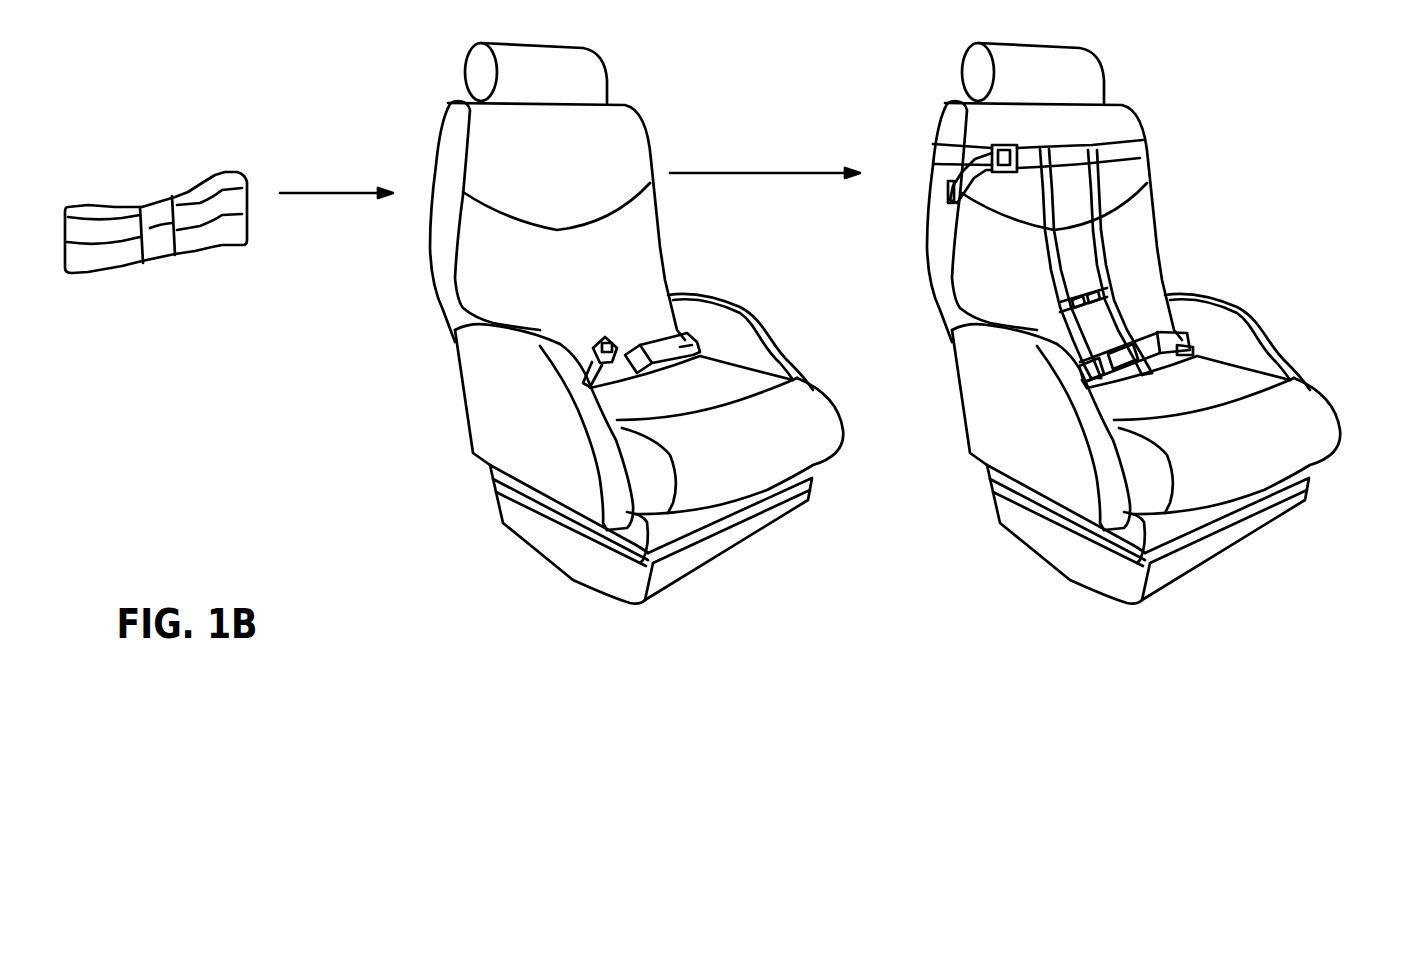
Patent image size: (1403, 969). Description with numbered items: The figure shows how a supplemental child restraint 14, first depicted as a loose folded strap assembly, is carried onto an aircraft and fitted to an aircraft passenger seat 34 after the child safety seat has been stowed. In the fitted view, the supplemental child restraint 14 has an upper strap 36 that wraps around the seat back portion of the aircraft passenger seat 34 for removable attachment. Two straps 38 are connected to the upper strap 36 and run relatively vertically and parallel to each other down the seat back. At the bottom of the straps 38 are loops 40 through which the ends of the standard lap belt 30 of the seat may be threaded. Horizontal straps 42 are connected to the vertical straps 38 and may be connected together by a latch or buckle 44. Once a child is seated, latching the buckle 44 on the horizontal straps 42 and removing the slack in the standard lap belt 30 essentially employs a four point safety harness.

The supplemental child restraint 14 is at (166, 272).
The standard lap belt 30 is at (717, 326).
The aircraft passenger seat 34 is at (753, 473).
The upper strap 36 is at (1120, 153).
The straps 38 is at (1045, 247).
The loops 40 is at (1190, 352).
The horizontal straps 42 is at (1072, 300).
The latch or buckle 44 is at (1113, 295).